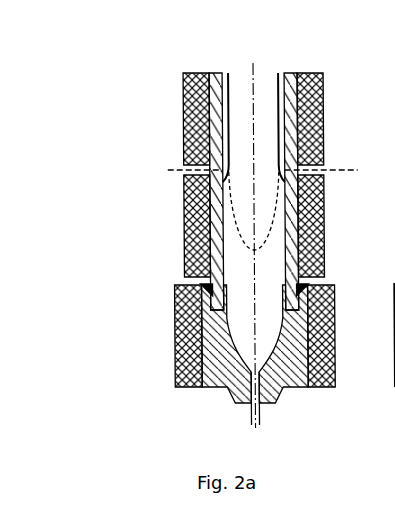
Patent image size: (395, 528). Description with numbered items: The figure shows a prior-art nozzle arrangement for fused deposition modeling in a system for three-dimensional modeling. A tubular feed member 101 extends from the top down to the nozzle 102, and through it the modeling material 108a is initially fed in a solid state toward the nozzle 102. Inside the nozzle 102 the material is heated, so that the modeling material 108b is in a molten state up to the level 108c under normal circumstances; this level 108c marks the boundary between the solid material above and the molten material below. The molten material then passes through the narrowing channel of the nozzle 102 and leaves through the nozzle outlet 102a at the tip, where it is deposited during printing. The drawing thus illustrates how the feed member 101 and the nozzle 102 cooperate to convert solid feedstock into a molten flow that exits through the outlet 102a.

The tubular feed member 101 is at (178, 97).
The nozzle 102 is at (172, 355).
The nozzle outlet 102a is at (265, 407).
The modeling material in a solid state 108a is at (245, 192).
The modeling material in a molten state 108b is at (235, 232).
The level 108c is at (172, 169).